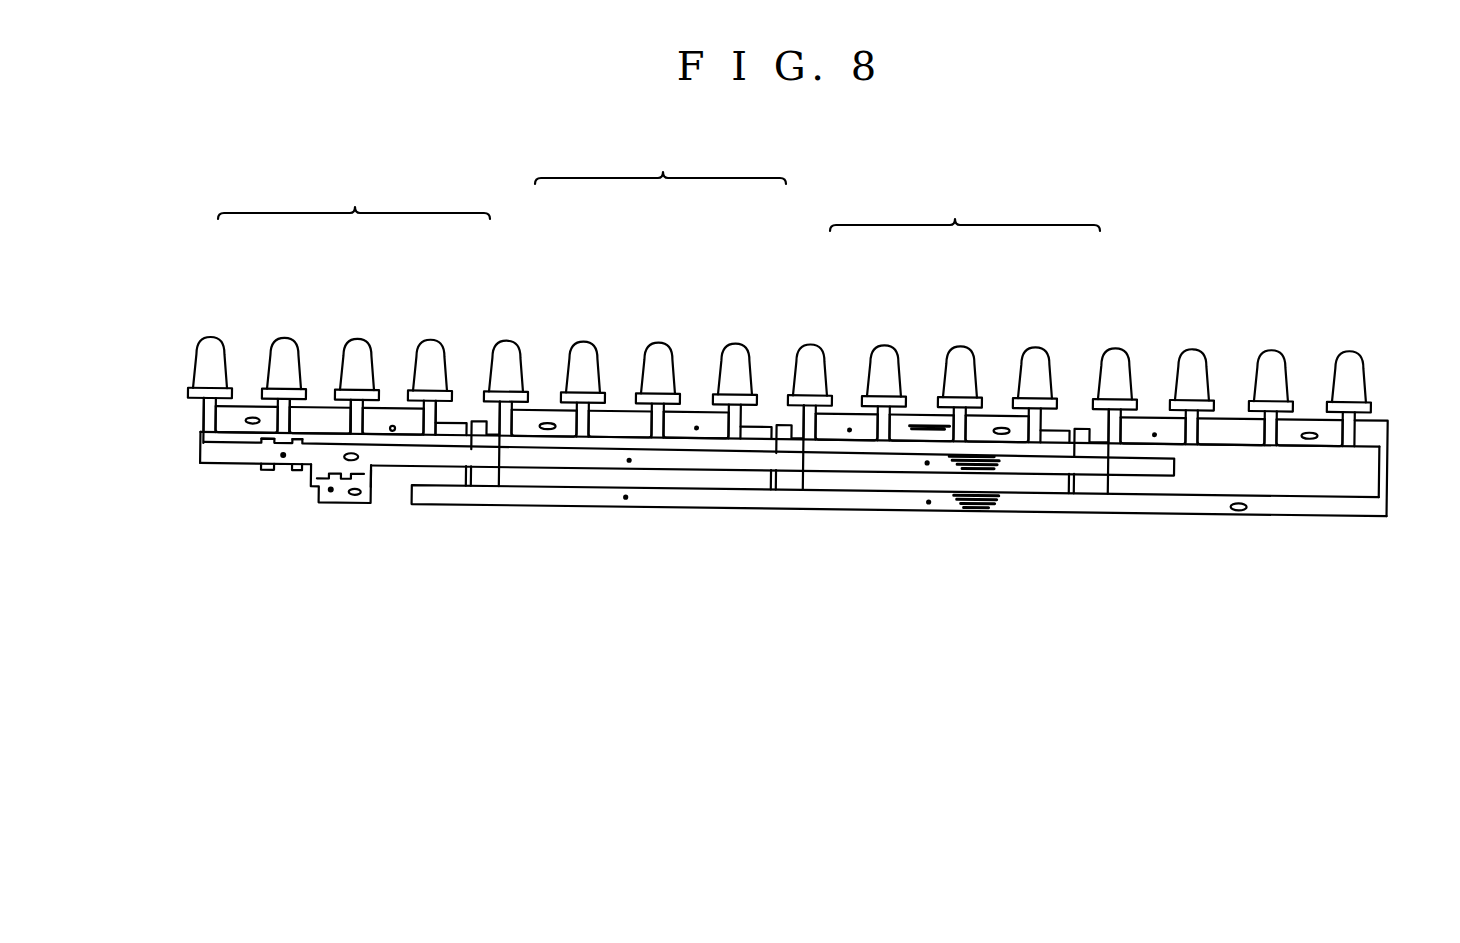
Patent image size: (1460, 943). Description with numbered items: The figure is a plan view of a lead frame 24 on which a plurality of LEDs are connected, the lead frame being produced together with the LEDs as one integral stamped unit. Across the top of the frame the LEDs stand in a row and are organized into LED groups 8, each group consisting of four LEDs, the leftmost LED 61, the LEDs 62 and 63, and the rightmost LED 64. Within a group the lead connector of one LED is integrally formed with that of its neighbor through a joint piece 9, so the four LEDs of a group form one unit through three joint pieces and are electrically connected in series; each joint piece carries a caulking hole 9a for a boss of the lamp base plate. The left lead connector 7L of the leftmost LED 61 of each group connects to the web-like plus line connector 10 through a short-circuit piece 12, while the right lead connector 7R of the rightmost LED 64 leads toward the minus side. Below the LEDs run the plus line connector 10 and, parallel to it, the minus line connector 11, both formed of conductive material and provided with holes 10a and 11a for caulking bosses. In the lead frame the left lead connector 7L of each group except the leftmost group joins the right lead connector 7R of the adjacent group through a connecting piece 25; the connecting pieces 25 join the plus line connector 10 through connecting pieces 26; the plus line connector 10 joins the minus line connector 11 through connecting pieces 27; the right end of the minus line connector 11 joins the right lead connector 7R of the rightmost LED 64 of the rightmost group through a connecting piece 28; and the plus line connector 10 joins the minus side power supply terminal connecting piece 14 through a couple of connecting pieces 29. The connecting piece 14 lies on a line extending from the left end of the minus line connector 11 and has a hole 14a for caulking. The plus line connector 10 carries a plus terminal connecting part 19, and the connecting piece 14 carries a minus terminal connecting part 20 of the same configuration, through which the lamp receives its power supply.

The leftmost LED 61 is at (208, 352).
The LED 62 is at (283, 353).
The LED 63 is at (356, 354).
The rightmost LED 64 is at (429, 355).
The left lead connector 7L is at (200, 406).
The right lead connector 7R is at (220, 407).
The LED group 8 is at (659, 185).
The joint piece 9 is at (617, 425).
The caulking hole 9a is at (545, 425).
The plus line connector 10 is at (812, 463).
The hole 10a is at (630, 460).
The minus line connector 11 is at (893, 505).
The hole 11a is at (627, 497).
The short-circuit piece 12 is at (202, 429).
The minus side power supply terminal connecting piece 14 is at (350, 501).
The hole 14a is at (376, 472).
The plus terminal connecting part 19 is at (280, 470).
The minus terminal connecting part 20 is at (330, 501).
The lead frame 24 is at (731, 524).
The connecting piece 25 is at (473, 421).
The connecting piece 26 is at (483, 445).
The connecting piece 27 is at (478, 478).
The connecting piece 28 is at (1388, 466).
The connecting piece 29 is at (305, 472).